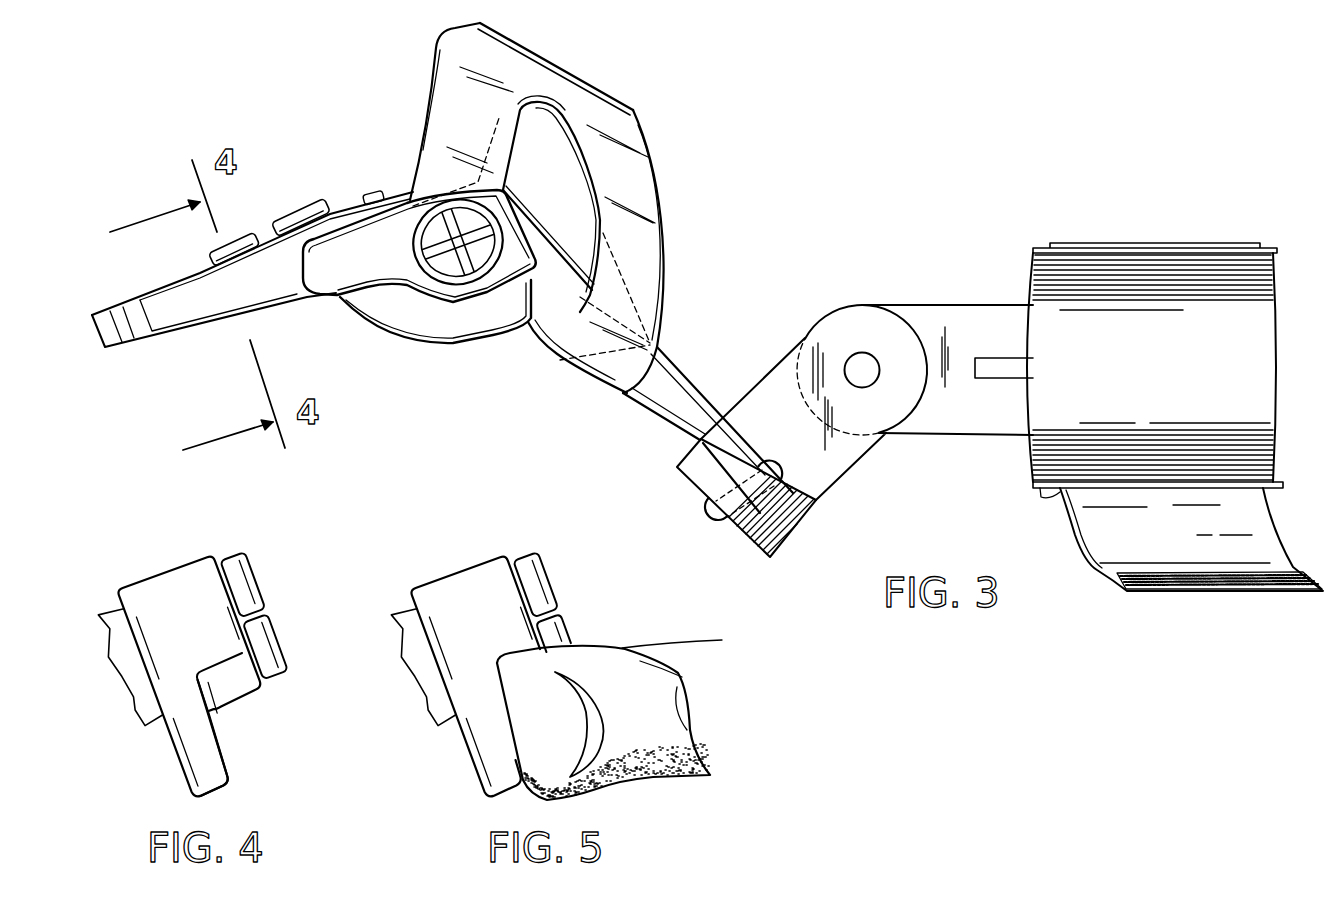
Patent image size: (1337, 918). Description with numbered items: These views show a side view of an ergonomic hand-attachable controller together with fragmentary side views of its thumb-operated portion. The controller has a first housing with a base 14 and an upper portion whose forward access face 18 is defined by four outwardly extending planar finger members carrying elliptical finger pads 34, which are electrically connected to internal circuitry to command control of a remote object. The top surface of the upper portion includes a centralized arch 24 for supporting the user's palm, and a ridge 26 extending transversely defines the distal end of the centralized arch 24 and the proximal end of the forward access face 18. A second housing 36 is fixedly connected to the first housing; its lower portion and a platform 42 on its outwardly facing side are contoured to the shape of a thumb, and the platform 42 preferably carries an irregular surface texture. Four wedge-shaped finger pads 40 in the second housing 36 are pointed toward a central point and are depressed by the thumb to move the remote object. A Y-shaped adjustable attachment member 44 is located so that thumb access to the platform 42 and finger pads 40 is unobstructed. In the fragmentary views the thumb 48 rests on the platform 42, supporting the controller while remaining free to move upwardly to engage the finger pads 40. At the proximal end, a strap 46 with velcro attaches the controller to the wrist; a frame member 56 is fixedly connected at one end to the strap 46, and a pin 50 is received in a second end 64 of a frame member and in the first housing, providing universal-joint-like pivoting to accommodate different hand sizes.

In FIG. 3, the base 14 is at (200, 327).
In FIG. 3, the forward access face 18 is at (353, 217).
In FIG. 3, the centralized arch 24 is at (522, 192).
In FIG. 3, the ridge 26 is at (440, 107).
In FIG. 3, the finger pad 34 is at (290, 224).
In FIG. 3, the second housing 36 is at (327, 302).
In FIG. 4, the second housing 36 is at (162, 580).
In FIG. 5, the second housing 36 is at (447, 580).
In FIG. 3, the finger pad 40 is at (413, 243).
In FIG. 4, the finger pad 40 is at (232, 562).
In FIG. 5, the finger pad 40 is at (532, 557).
In FIG. 3, the platform 42 is at (453, 332).
In FIG. 4, the platform 42 is at (222, 750).
In FIG. 3, the Y-shaped adjustable attachment member 44 is at (635, 120).
In FIG. 3, the strap 46 is at (1270, 520).
In FIG. 5, the thumb 48 is at (623, 647).
In FIG. 3, the pin 50 is at (717, 520).
In FIG. 3, the frame member 56 is at (930, 300).
In FIG. 3, the second end 64 is at (780, 557).